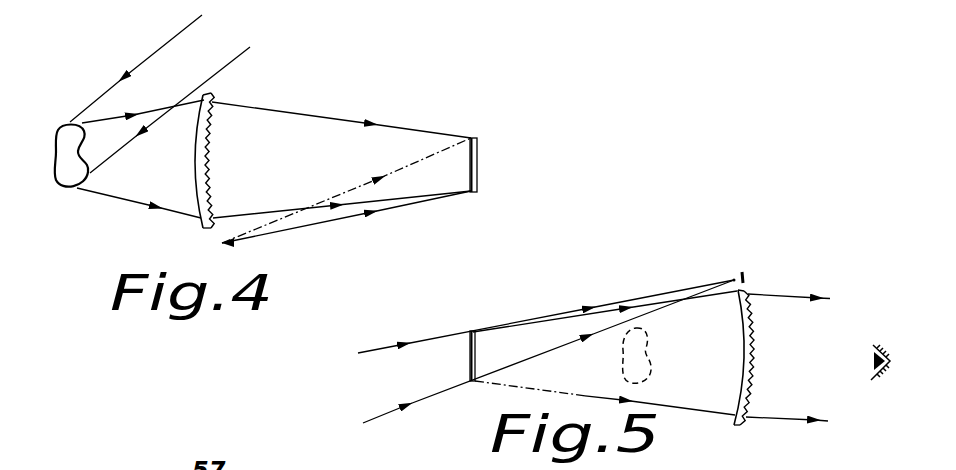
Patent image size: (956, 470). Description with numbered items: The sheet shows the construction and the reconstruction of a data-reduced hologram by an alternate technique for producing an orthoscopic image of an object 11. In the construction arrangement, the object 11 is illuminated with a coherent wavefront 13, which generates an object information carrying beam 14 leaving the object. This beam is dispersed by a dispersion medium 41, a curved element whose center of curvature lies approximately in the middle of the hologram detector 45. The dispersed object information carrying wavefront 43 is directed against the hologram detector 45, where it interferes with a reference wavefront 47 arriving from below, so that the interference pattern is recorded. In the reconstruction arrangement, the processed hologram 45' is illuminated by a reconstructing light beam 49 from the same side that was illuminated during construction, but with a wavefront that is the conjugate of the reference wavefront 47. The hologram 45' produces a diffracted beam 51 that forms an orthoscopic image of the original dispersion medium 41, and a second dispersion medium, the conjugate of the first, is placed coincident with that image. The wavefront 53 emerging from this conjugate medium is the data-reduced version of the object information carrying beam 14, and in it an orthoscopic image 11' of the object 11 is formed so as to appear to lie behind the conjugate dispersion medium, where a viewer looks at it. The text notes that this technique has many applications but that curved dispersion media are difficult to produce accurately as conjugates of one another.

In FIG. 4, the object 11 is at (65, 179).
In FIG. 5, the orthoscopic image 11' is at (675, 355).
In FIG. 4, the coherent wavefront 13 is at (163, 55).
In FIG. 4, the object information carrying beam 14 is at (132, 195).
In FIG. 4, the dispersion medium 41 is at (213, 90).
In FIG. 4, the dispersed object information carrying wavefront 43 is at (303, 115).
In FIG. 4, the hologram detector 45 is at (507, 151).
In FIG. 5, the hologram 45' is at (547, 330).
In FIG. 4, the reference wavefront 47 is at (320, 222).
In FIG. 5, the reconstructing light beam 49 is at (443, 392).
In FIG. 5, the diffracted beam 51 is at (682, 405).
In FIG. 5, the wavefront 53 is at (785, 305).